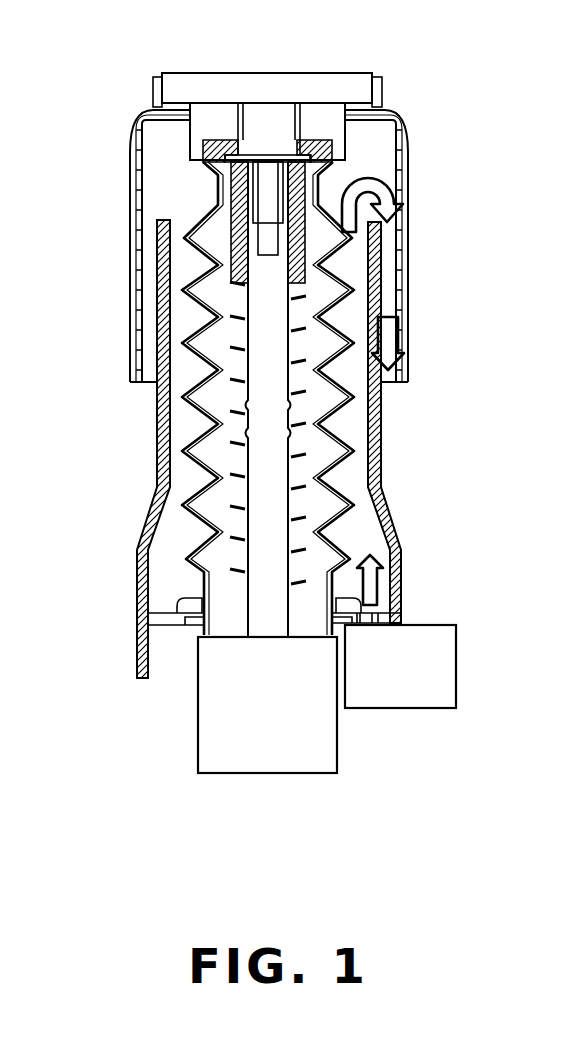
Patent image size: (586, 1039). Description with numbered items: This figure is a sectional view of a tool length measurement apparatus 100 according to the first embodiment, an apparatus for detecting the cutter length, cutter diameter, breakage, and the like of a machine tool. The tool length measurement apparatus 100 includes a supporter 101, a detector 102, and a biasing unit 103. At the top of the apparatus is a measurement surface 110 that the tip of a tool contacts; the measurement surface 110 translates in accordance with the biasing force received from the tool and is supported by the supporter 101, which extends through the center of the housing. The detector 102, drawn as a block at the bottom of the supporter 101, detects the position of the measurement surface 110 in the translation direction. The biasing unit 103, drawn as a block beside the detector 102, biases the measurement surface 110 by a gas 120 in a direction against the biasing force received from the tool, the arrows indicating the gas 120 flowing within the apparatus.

The tool length measurement apparatus 100 is at (107, 107).
The supporter 101 is at (248, 458).
The detector 102 is at (198, 705).
The biasing unit 103 is at (457, 666).
The measurement surface 110 is at (265, 73).
The gas 120 is at (398, 191).